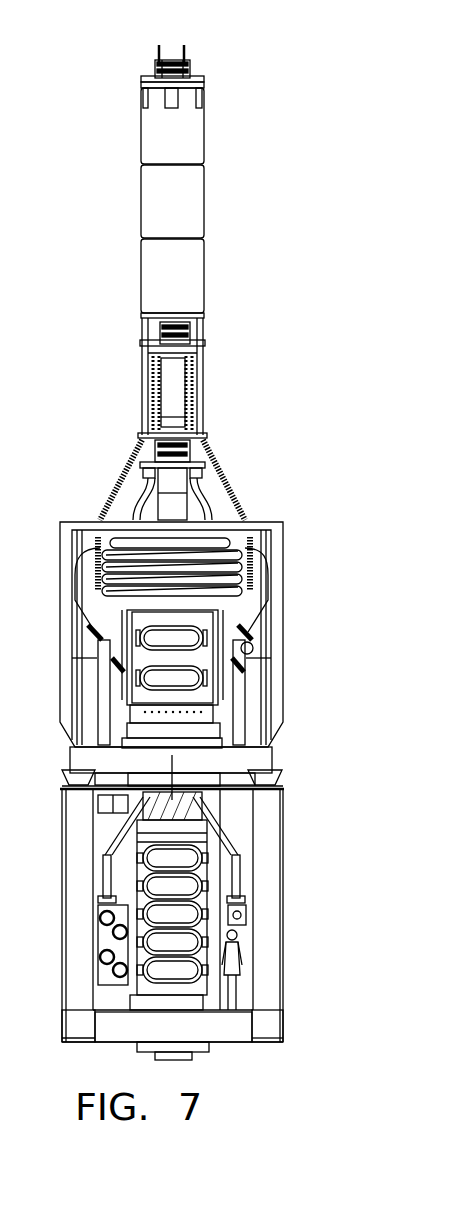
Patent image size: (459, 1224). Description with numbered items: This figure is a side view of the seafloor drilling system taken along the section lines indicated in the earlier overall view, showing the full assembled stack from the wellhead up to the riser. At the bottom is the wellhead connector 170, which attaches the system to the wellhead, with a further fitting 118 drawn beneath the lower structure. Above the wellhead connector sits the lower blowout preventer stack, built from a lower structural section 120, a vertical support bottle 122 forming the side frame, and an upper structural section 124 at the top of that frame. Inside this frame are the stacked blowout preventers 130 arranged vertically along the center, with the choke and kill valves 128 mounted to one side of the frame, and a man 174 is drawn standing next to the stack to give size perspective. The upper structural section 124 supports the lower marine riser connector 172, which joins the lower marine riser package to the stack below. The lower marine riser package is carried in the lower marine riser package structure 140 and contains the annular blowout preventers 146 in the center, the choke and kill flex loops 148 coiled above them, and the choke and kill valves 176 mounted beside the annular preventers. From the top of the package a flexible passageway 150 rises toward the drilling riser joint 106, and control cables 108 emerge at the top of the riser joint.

The drilling riser joint 106 is at (187, 220).
The control cables 108 is at (187, 47).
The bottom fitting 118 is at (190, 1057).
The lower structural section 120 is at (187, 1028).
The vertical support bottle 122 is at (267, 980).
The upper structural section 124 is at (283, 789).
The choke and kill valves 128 is at (458, 905).
The blowout preventers 130 is at (190, 858).
The lower marine riser package structure 140 is at (255, 758).
The annular blowout preventers 146 is at (187, 697).
The choke and kill flex loops 148 is at (245, 562).
The flexible passageway 150 is at (187, 497).
The wellhead connector 170 is at (187, 1045).
The lower marine riser connector 172 is at (187, 735).
The man 174 is at (458, 940).
The choke and kill valves 176 is at (458, 640).